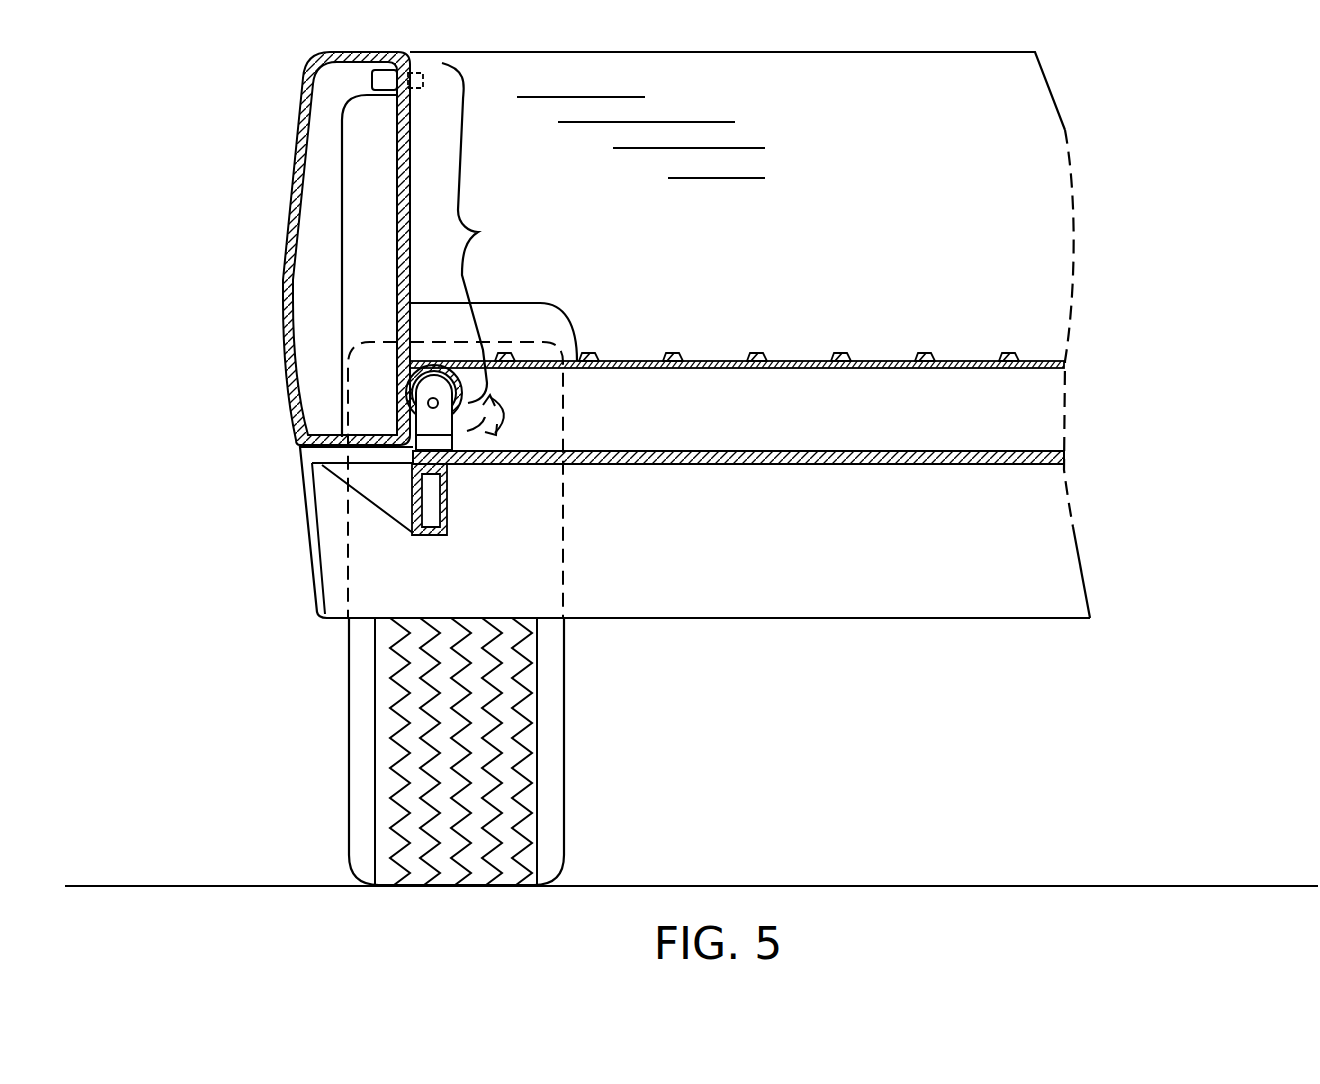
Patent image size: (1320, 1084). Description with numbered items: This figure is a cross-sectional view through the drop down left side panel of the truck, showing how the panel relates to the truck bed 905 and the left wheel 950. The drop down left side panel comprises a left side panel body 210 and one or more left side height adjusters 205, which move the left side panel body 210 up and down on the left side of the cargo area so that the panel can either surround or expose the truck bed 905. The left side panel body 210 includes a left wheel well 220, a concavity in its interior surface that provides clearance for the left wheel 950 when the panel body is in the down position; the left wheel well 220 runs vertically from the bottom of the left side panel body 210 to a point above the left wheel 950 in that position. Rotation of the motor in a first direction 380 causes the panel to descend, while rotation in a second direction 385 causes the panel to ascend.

The left side panel body 210 is at (312, 83).
The left wheel well 220 is at (342, 258).
The left side height adjuster 205 is at (478, 232).
The truck bed 905 is at (1043, 362).
The second direction 385 is at (510, 410).
The first direction 380 is at (484, 418).
The left wheel 950 is at (355, 762).